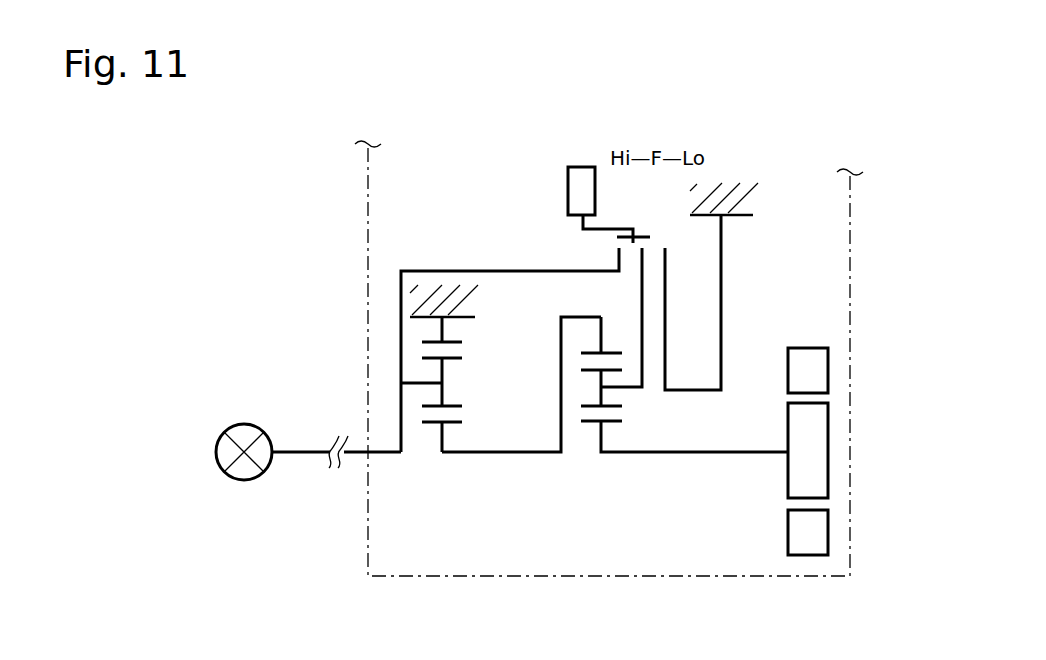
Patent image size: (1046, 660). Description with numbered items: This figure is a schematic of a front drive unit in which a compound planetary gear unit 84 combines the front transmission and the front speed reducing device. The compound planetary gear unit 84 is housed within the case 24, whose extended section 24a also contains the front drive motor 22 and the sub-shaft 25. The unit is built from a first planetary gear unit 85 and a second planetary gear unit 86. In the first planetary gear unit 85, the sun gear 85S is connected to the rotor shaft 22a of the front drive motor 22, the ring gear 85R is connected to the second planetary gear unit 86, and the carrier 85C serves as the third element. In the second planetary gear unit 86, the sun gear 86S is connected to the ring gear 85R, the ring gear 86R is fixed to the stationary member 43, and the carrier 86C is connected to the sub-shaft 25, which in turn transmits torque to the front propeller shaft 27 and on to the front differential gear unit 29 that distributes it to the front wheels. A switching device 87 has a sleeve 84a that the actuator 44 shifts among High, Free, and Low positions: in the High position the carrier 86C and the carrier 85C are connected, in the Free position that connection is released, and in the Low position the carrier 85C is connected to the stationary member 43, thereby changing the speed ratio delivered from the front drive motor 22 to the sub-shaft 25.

The front drive motor 22 is at (834, 366).
The rotor shaft 22a is at (813, 472).
The case 24 is at (850, 285).
The extended section 24a is at (850, 525).
The sub-shaft 25 is at (390, 452).
The front propeller shaft 27 is at (310, 448).
The front differential gear unit 29 is at (239, 424).
The stationary member 43 is at (459, 317).
The actuator 44 is at (583, 192).
The compound planetary gear unit 84 is at (616, 399).
The shift sleeve 84a is at (636, 240).
The first planetary gear unit 85 is at (644, 409).
The carrier 85C is at (642, 300).
The ring gear 85R is at (595, 352).
The sun gear 85S is at (604, 424).
The second planetary gear unit 86 is at (461, 409).
The carrier 86C is at (398, 358).
The ring gear 86R is at (429, 342).
The sun gear 86S is at (445, 423).
The switching device 87 is at (592, 247).